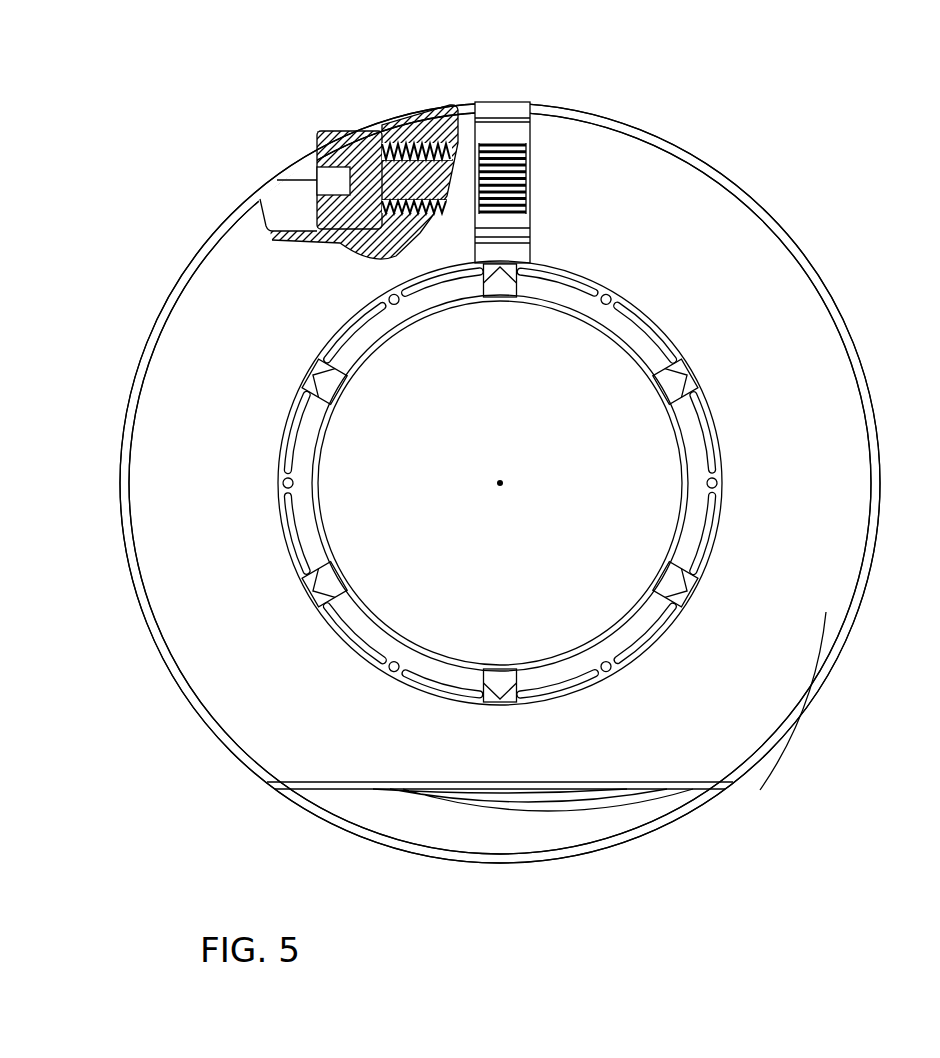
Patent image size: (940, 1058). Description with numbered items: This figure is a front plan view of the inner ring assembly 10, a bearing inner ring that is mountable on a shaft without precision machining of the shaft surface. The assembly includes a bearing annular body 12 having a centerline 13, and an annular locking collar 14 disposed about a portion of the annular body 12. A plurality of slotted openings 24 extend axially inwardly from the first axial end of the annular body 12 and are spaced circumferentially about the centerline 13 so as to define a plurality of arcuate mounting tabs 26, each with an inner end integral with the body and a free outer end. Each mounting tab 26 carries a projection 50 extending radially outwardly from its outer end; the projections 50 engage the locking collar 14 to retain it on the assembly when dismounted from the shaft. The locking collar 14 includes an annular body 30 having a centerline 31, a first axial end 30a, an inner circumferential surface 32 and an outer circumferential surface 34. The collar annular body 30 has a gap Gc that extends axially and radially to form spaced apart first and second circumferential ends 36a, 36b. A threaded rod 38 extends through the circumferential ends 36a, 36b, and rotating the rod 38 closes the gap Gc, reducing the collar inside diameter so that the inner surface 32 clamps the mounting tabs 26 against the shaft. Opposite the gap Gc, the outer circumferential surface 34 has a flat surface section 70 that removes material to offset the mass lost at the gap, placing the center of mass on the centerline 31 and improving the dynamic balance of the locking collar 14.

The inner ring assembly 10 is at (116, 186).
The annular body 12 is at (652, 850).
The centerline 13 is at (500, 483).
The annular locking collar 14 is at (112, 415).
The slotted openings 24 is at (500, 290).
The arcuate mounting tabs 26 is at (350, 328).
The collar annular body 30 is at (114, 501).
The first axial end 30a is at (826, 612).
The collar centerline 31 is at (500, 483).
The inner circumferential surface 32 is at (718, 547).
The outer circumferential surface 34 is at (837, 298).
The first circumferential end 36a is at (537, 122).
The second circumferential end 36b is at (470, 104).
The threaded rod 38 is at (523, 186).
The projection 50 is at (613, 294).
The flat surface section 70 is at (683, 790).
The gap Gc is at (501, 128).